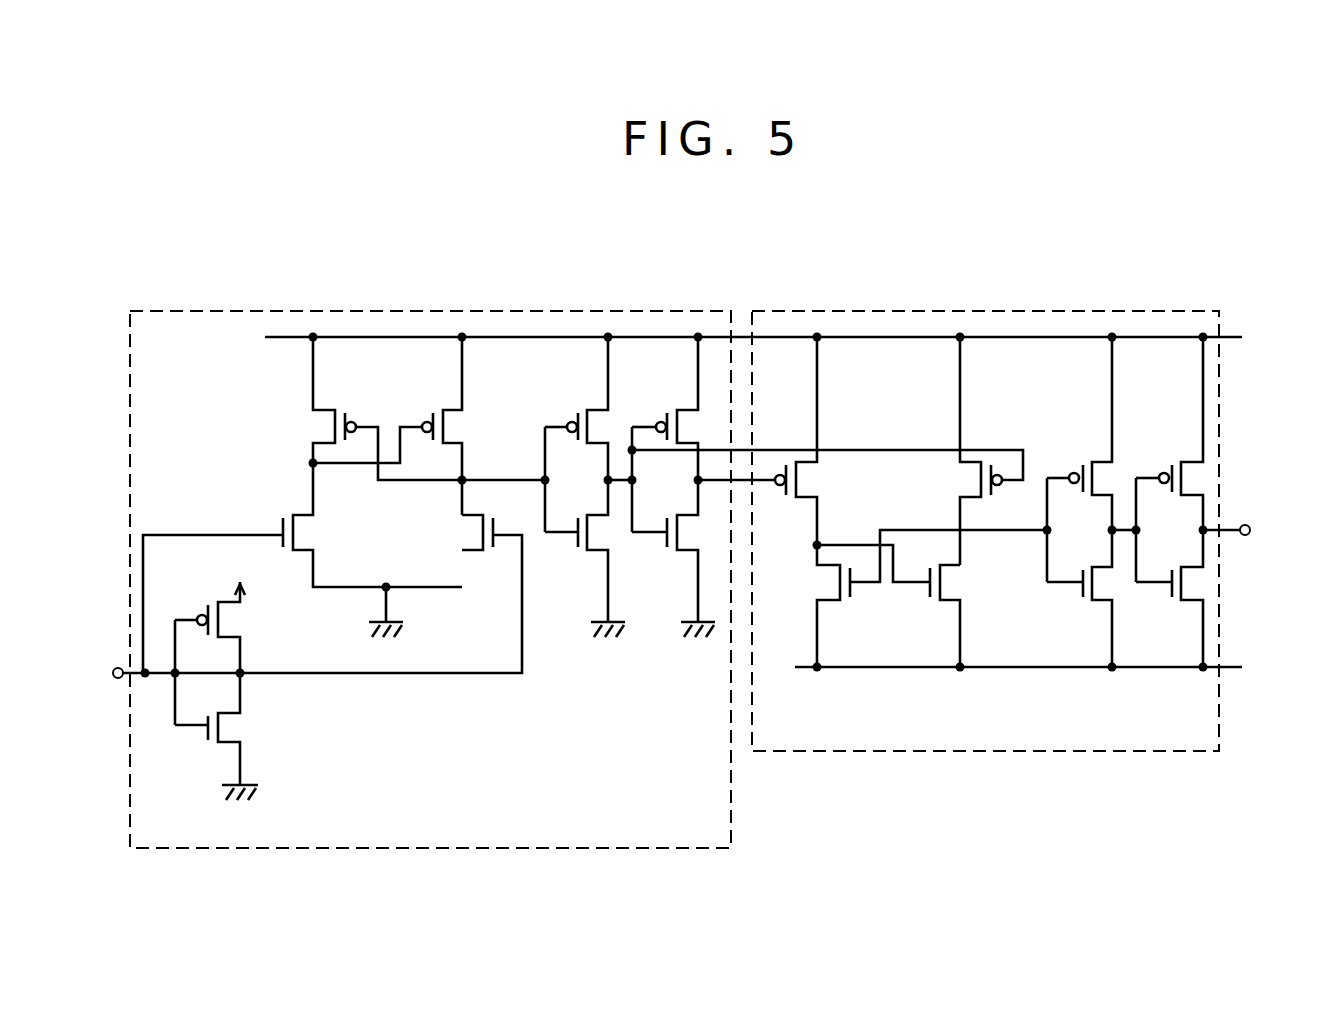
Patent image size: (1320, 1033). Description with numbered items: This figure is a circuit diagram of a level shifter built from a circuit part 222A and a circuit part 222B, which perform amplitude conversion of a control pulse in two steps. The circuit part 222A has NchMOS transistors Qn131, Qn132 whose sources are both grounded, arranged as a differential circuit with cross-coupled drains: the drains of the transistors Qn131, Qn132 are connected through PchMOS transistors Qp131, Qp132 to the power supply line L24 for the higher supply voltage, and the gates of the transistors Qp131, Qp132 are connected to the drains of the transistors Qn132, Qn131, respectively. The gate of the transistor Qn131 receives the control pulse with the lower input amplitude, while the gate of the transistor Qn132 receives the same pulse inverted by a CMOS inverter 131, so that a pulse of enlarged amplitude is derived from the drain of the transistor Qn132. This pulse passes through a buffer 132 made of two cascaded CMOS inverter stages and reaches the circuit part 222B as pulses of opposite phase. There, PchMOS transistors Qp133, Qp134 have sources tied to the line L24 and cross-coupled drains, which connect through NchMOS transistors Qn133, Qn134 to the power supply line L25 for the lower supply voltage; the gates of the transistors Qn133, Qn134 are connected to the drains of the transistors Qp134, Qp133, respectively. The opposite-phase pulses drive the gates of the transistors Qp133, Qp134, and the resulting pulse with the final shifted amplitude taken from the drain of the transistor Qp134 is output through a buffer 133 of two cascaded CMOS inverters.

The CMOS inverter 131 is at (197, 767).
The buffer 132 is at (661, 639).
The buffer 133 is at (1073, 425).
The circuit part 222A is at (310, 305).
The circuit part 222B is at (946, 305).
The power supply line L24 is at (528, 337).
The power supply line L25 is at (895, 670).
The PchMOS transistor Qp131 is at (399, 408).
The PchMOS transistor Qp132 is at (420, 426).
The PchMOS transistor Qp133 is at (827, 441).
The PchMOS transistor Qp134 is at (950, 451).
The NchMOS transistor Qn131 is at (302, 568).
The NchMOS transistor Qn132 is at (381, 594).
The NchMOS transistor Qn133 is at (904, 598).
The NchMOS transistor Qn134 is at (917, 606).